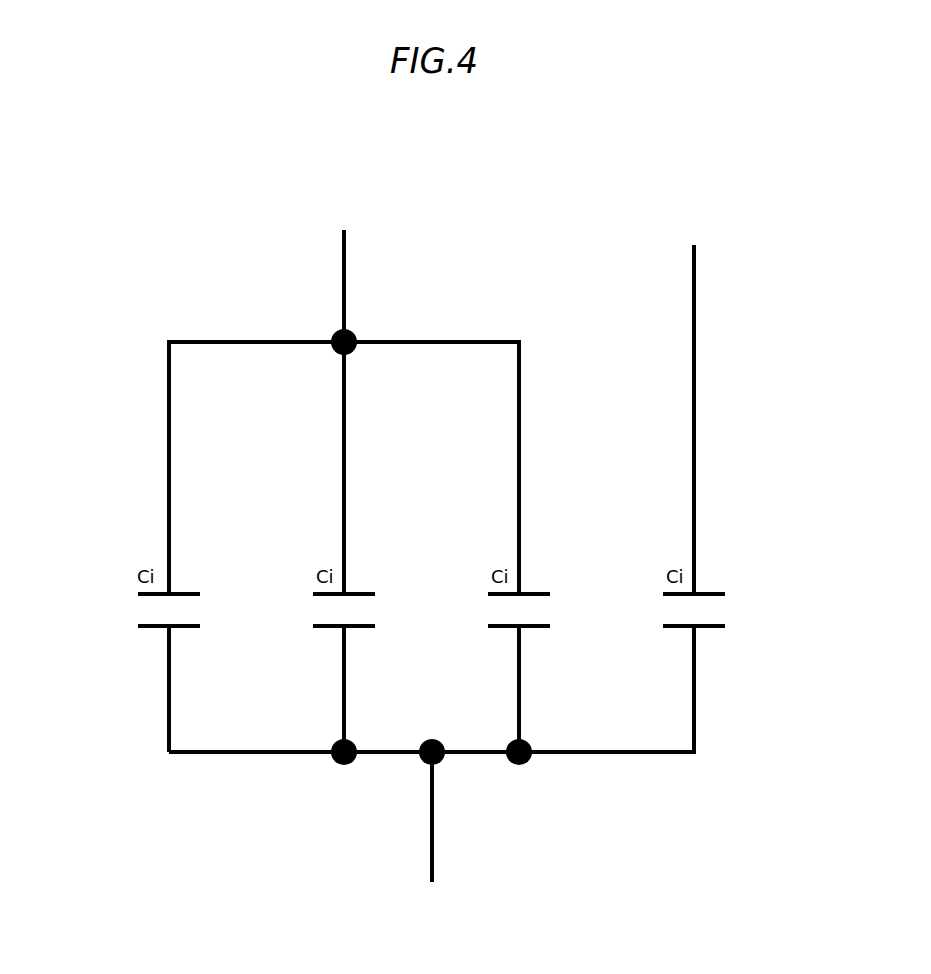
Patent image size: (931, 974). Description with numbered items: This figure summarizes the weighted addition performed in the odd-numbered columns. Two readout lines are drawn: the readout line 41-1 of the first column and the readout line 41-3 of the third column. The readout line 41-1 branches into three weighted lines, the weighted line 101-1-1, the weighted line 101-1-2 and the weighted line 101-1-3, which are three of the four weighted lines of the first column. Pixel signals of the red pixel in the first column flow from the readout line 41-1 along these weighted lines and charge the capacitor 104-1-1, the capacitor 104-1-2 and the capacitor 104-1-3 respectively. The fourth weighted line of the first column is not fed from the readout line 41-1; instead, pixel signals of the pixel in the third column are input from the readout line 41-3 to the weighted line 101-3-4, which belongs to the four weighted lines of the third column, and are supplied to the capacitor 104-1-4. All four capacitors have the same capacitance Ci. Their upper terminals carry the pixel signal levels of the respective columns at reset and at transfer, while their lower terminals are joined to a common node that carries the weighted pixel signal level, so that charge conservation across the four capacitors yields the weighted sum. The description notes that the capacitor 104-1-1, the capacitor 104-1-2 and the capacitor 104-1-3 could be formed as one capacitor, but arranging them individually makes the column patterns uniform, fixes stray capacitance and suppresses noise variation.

The readout line 41-1 is at (344, 272).
The readout line 41-3 is at (694, 317).
The weighted line 101-1-1 is at (169, 404).
The weighted line 101-1-2 is at (344, 450).
The weighted line 101-1-3 is at (519, 480).
The weighted line 101-3-4 is at (694, 372).
The capacitor 104-1-1 is at (160, 627).
The capacitor 104-1-2 is at (332, 627).
The capacitor 104-1-3 is at (530, 628).
The capacitor 104-1-4 is at (705, 594).